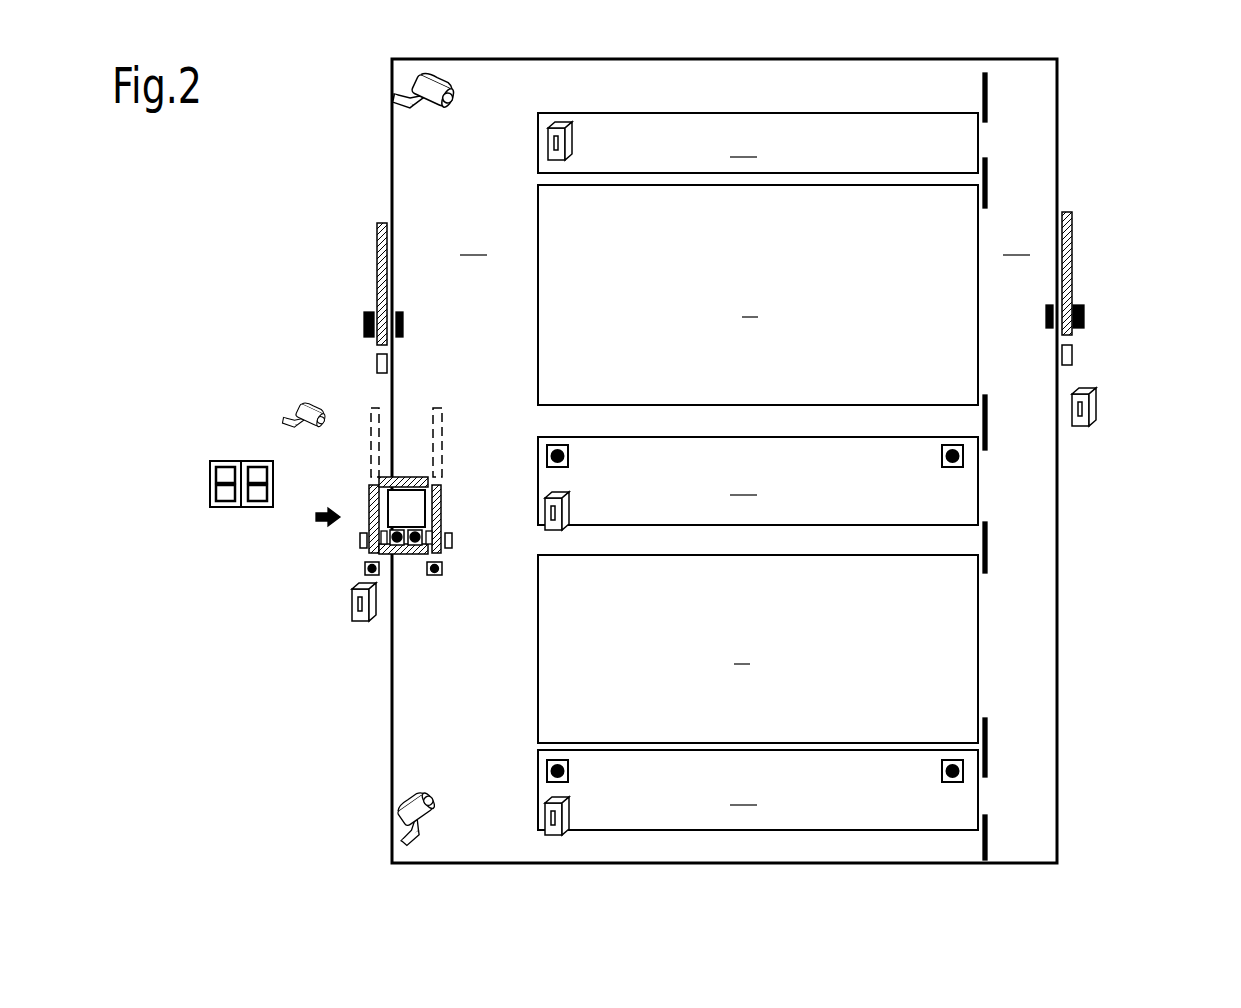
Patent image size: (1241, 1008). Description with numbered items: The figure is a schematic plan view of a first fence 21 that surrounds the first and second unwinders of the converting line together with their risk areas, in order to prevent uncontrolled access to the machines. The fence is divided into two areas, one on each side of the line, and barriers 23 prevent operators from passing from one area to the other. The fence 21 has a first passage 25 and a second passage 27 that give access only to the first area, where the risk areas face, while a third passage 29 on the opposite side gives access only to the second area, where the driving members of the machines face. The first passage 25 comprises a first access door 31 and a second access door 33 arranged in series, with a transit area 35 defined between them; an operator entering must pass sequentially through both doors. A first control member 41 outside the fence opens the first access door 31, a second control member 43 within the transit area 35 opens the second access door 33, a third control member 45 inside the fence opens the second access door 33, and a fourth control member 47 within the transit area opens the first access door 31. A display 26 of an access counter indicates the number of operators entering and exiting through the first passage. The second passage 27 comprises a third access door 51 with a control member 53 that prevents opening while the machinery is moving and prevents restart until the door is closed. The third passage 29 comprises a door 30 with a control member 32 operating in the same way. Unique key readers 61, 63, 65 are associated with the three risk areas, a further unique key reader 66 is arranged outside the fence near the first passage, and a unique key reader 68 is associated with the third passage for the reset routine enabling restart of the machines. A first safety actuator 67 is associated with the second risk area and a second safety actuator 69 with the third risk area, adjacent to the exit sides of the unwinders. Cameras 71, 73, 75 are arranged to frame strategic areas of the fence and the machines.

The first fence 21 is at (1150, 434).
The barriers 23 is at (988, 92).
The first passage 25 is at (321, 541).
The display of the access counter 26 is at (197, 493).
The second passage 27 is at (341, 235).
The third passage 29 is at (1110, 216).
The door 30 is at (1070, 250).
The first access door 31 is at (370, 442).
The control member 32 is at (1073, 355).
The second access door 33 is at (441, 500).
The transit area 35 is at (397, 489).
The first control member 41 is at (365, 568).
The second control member 43 is at (426, 527).
The third control member 45 is at (442, 568).
The fourth control member 47 is at (398, 550).
The third access door 51 is at (380, 268).
The control member 53 is at (378, 362).
The unique key reader 61 is at (574, 143).
The unique key reader 63 is at (571, 506).
The unique key reader 65 is at (571, 813).
The further unique key reader 66 is at (340, 602).
The first safety actuator 67 is at (569, 456).
The unique key reader 68 is at (1096, 406).
The second safety actuator 69 is at (569, 770).
The camera 71 is at (306, 407).
The camera 73 is at (455, 108).
The camera 75 is at (417, 790).